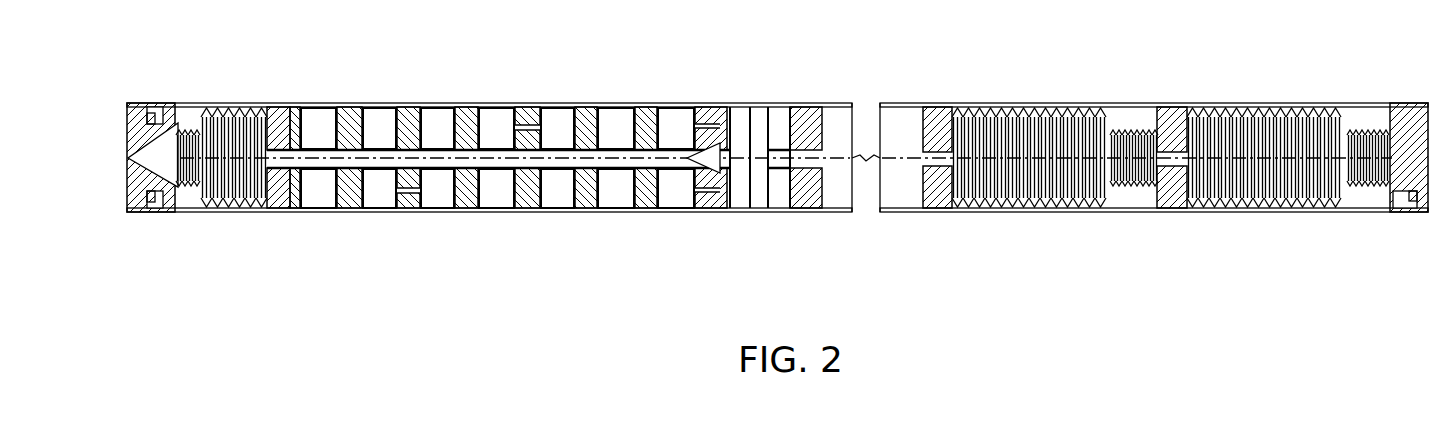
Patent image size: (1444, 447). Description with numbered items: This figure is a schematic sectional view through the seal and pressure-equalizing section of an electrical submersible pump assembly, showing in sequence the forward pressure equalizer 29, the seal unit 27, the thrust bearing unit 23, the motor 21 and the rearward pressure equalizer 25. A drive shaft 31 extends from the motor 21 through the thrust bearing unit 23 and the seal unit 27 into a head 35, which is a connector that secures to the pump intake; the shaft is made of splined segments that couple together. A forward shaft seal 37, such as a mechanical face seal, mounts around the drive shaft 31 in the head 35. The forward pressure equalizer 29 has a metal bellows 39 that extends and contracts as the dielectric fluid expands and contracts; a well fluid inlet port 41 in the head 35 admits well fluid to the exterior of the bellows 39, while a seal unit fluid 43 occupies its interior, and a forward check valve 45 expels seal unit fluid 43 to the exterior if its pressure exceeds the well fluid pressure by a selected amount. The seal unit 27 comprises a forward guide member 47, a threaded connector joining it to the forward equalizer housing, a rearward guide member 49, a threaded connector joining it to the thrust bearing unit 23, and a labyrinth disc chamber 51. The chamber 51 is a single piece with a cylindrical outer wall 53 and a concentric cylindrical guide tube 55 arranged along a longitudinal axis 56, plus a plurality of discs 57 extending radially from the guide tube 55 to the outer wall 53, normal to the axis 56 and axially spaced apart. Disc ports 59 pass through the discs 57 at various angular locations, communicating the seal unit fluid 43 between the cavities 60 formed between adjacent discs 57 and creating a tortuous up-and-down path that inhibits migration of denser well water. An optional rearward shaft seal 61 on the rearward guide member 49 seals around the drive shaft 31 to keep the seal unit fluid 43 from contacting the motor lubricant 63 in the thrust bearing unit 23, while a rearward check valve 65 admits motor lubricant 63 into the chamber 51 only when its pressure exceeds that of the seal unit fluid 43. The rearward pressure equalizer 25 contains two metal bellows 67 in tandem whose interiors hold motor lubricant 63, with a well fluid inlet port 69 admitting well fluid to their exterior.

The motor 21 is at (1154, 148).
The thrust bearing unit 23 is at (776, 148).
The rearward pressure equalizer 25 is at (1190, 148).
The seal unit 27 is at (452, 87).
The forward pressure equalizer 29 is at (232, 164).
The drive shaft 31 is at (437, 162).
The head 35 is at (164, 181).
The forward shaft seal 37 is at (186, 168).
The metal bellows 39 is at (212, 104).
The well fluid inlet port 41 is at (152, 212).
The seal unit fluid 43 is at (276, 104).
The forward check valve 45 is at (168, 102).
The forward guide member 47 is at (284, 212).
The rearward guide member 49 is at (710, 212).
The labyrinth disc chamber 51 is at (504, 177).
The cylindrical outer wall 53 is at (628, 212).
The cylindrical guide tube 55 is at (494, 170).
The longitudinal axis 56 is at (642, 138).
The discs 57 is at (358, 212).
The disc ports 59 is at (532, 118).
The cavities 60 is at (370, 122).
The rearward shaft seal 61 is at (722, 212).
The motor lubricant 63 is at (740, 196).
The rearward check valve 65 is at (706, 140).
The metal bellows 67 is at (1005, 210).
The well fluid inlet port 69 is at (1412, 212).